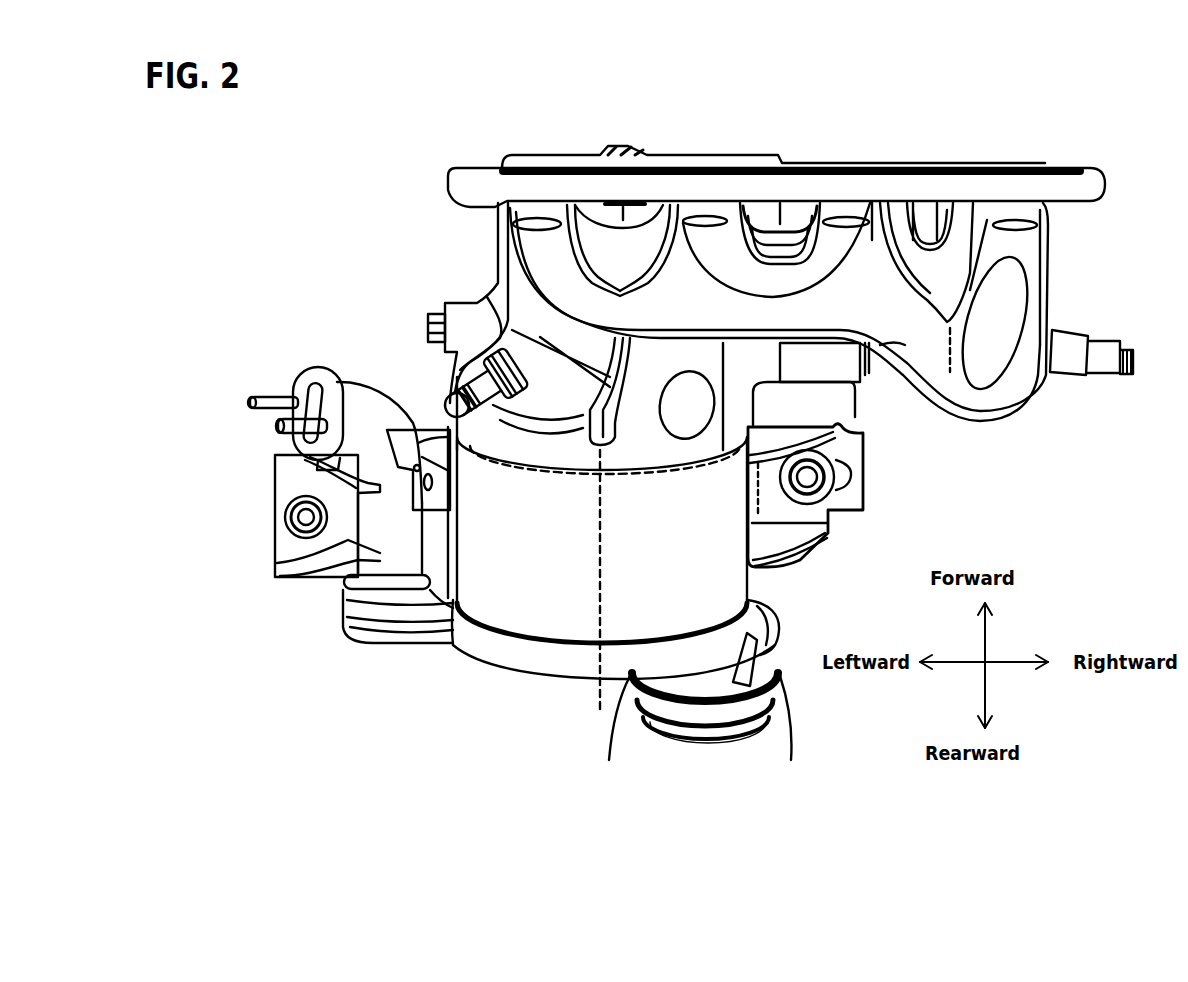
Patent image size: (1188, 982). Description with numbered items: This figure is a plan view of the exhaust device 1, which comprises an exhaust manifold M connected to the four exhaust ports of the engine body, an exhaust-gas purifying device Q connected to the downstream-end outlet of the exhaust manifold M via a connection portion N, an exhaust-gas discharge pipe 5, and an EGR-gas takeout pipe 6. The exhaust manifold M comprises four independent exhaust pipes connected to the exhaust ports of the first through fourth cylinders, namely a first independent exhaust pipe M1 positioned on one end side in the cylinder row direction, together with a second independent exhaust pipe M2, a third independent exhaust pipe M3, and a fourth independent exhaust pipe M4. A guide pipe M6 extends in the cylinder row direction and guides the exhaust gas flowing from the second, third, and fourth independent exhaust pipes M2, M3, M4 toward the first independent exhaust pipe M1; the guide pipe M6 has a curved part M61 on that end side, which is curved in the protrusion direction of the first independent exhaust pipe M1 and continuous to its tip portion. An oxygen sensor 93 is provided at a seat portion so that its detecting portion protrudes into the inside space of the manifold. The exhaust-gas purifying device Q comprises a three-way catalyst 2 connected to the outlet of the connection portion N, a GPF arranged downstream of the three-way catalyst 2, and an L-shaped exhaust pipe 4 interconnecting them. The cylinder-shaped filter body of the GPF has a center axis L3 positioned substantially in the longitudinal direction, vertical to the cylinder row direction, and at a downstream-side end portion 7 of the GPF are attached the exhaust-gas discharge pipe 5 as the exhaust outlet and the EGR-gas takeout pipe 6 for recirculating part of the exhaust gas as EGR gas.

The exhaust device 1 is at (385, 177).
The exhaust manifold M is at (1057, 171).
The first independent exhaust pipe M1 is at (1017, 238).
The second independent exhaust pipe M2 is at (845, 215).
The third independent exhaust pipe M3 is at (717, 215).
The fourth independent exhaust pipe M4 is at (545, 210).
The guide pipe M6 is at (799, 277).
The curved part M61 is at (897, 328).
The connection portion N is at (880, 370).
The oxygen sensor 93 is at (1063, 335).
The three-way catalyst 2 is at (836, 370).
The L-shaped exhaust pipe 4 is at (740, 404).
The exhaust-gas purifying device Q is at (902, 476).
The downstream-side end portion 7 is at (532, 655).
The center axis L3 is at (600, 577).
The exhaust-gas discharge pipe 5 is at (775, 745).
The EGR-gas takeout pipe 6 is at (392, 565).